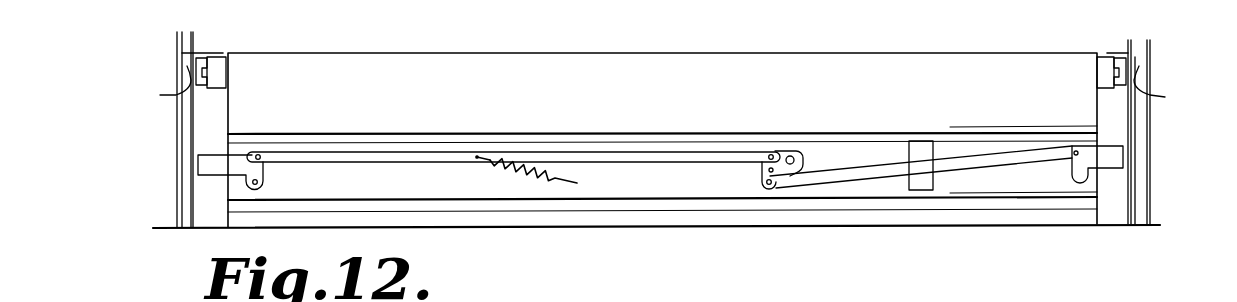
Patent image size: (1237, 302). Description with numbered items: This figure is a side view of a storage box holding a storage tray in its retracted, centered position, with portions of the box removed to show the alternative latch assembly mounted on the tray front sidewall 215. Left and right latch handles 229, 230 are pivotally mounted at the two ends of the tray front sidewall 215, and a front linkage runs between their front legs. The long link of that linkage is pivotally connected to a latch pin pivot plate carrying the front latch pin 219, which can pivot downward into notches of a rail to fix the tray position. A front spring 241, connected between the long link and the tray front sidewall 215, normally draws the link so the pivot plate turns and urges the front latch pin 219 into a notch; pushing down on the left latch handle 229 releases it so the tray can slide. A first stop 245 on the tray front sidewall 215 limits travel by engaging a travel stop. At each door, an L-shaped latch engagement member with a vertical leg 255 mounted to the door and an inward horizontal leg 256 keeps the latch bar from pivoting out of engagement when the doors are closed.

The tray front sidewall 215 is at (1052, 185).
The front latch pin 219 is at (791, 156).
The left latch handle 229 is at (205, 172).
The right latch handle 230 is at (1110, 158).
The front spring 241 is at (520, 168).
The first stop 245 is at (909, 150).
The vertical leg 255 is at (1120, 55).
The horizontal leg 256 is at (205, 56).